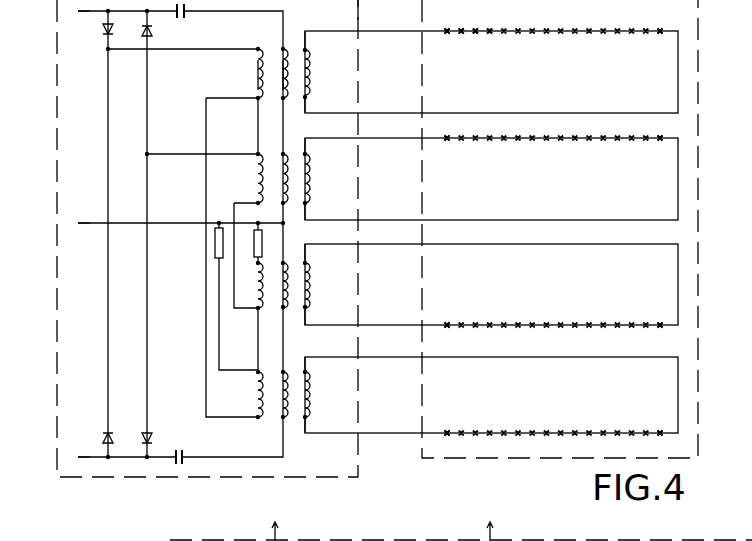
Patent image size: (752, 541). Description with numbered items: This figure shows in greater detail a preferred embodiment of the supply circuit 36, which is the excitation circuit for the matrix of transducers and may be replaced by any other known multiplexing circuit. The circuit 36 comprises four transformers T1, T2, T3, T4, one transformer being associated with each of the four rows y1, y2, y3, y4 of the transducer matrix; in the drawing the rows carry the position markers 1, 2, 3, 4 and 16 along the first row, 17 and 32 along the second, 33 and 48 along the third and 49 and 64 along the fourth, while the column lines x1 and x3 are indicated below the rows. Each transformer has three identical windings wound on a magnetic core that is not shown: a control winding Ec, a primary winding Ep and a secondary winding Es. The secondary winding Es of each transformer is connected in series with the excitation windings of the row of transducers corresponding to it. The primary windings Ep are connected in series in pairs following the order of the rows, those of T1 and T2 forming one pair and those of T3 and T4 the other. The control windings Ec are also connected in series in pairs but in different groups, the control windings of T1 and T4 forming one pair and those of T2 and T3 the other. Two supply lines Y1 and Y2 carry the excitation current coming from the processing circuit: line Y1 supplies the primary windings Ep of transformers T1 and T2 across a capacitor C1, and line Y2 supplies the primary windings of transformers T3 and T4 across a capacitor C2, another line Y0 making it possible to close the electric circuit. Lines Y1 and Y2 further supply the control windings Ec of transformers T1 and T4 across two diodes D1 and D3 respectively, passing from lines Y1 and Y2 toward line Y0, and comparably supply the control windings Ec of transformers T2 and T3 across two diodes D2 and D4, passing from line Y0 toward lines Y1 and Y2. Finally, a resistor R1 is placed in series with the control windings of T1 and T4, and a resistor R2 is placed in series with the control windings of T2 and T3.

The supply line Y1 is at (75, 18).
The line Y0 is at (74, 230).
The supply line Y2 is at (74, 448).
The diode D1 is at (105, 30).
The diode D2 is at (153, 30).
The diode D3 is at (104, 437).
The diode D4 is at (151, 436).
The capacitor C1 is at (188, 16).
The capacitor C2 is at (176, 453).
The resistor R1 is at (215, 238).
The resistor R2 is at (254, 252).
The transformer T1 is at (226, 70).
The transformer T2 is at (226, 179).
The transformer T3 is at (275, 326).
The transformer T4 is at (276, 423).
The primary winding Ep is at (280, 80).
The control winding Ec is at (255, 80).
The secondary winding Es is at (311, 66).
The row of the matrix of transducers y1 is at (491, 71).
The row of the matrix of transducers y2 is at (491, 178).
The row of the matrix of transducers y3 is at (491, 286).
The row of the matrix of transducers y4 is at (491, 396).
The winding position 1 is at (444, 21).
The winding position 2 is at (458, 21).
The winding position 3 is at (472, 21).
The winding position 4 is at (486, 21).
The winding position 16 is at (661, 21).
The winding position 17 is at (449, 153).
The winding position 32 is at (654, 153).
The winding position 33 is at (452, 315).
The winding position 48 is at (653, 312).
The winding position 49 is at (449, 422).
The winding position 64 is at (653, 421).
The supply circuit 36 is at (372, 10).
The x-axis wire x1 is at (288, 526).
The x-axis wire x3 is at (502, 526).